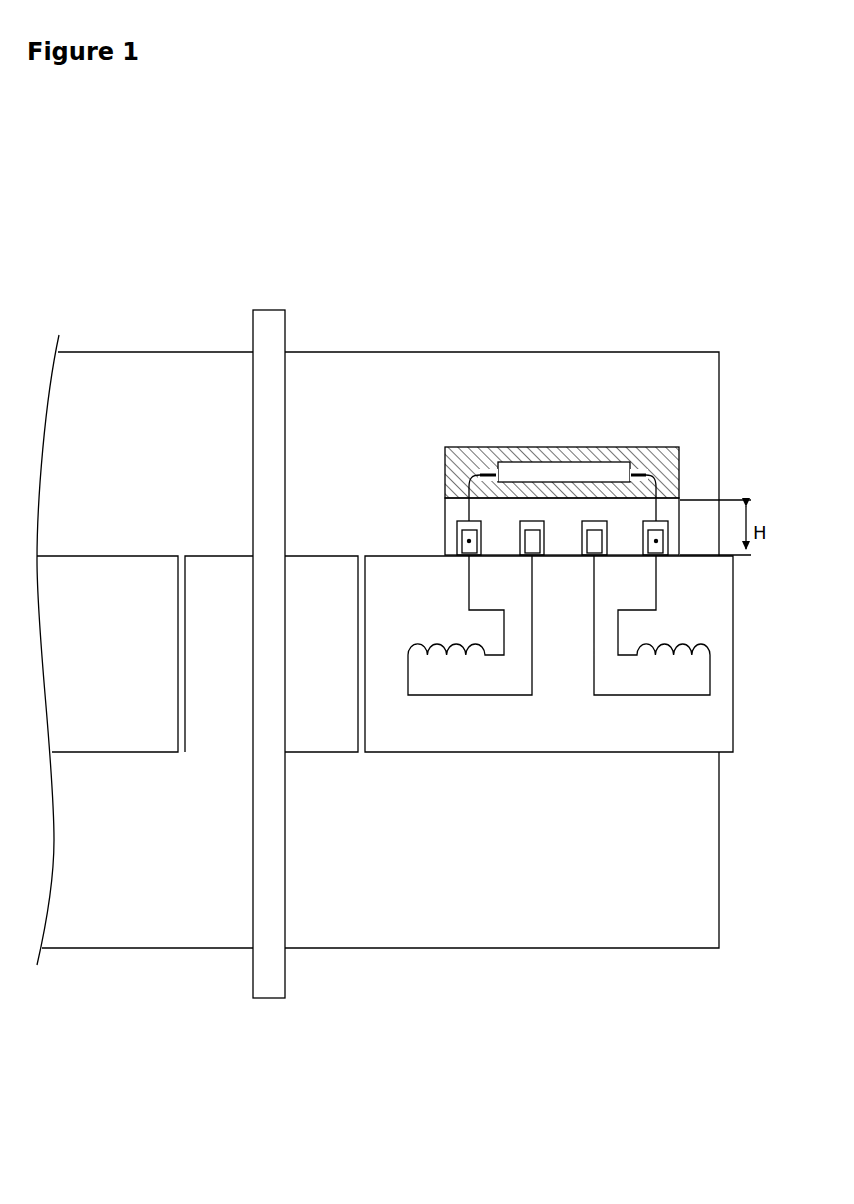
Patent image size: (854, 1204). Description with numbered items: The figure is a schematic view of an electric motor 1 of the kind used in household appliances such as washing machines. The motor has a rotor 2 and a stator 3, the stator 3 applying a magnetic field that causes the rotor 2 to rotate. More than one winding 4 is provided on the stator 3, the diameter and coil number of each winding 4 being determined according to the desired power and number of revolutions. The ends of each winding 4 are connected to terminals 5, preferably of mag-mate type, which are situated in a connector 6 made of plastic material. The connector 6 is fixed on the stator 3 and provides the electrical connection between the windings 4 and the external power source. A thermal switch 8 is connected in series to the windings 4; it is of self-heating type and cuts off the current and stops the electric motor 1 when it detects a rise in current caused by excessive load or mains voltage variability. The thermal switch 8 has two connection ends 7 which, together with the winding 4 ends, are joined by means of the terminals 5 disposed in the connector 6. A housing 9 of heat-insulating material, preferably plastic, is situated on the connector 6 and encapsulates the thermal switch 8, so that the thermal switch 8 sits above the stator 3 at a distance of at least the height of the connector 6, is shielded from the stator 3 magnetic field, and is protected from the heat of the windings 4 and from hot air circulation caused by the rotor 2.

The electric motor 1 is at (257, 222).
The rotor 2 is at (230, 565).
The stator 3 is at (552, 738).
The winding 4 is at (420, 645).
The terminal 5 is at (463, 557).
The connector 6 is at (452, 513).
The connection end 7 is at (490, 473).
The thermal switch 8 is at (565, 473).
The housing 9 is at (457, 462).